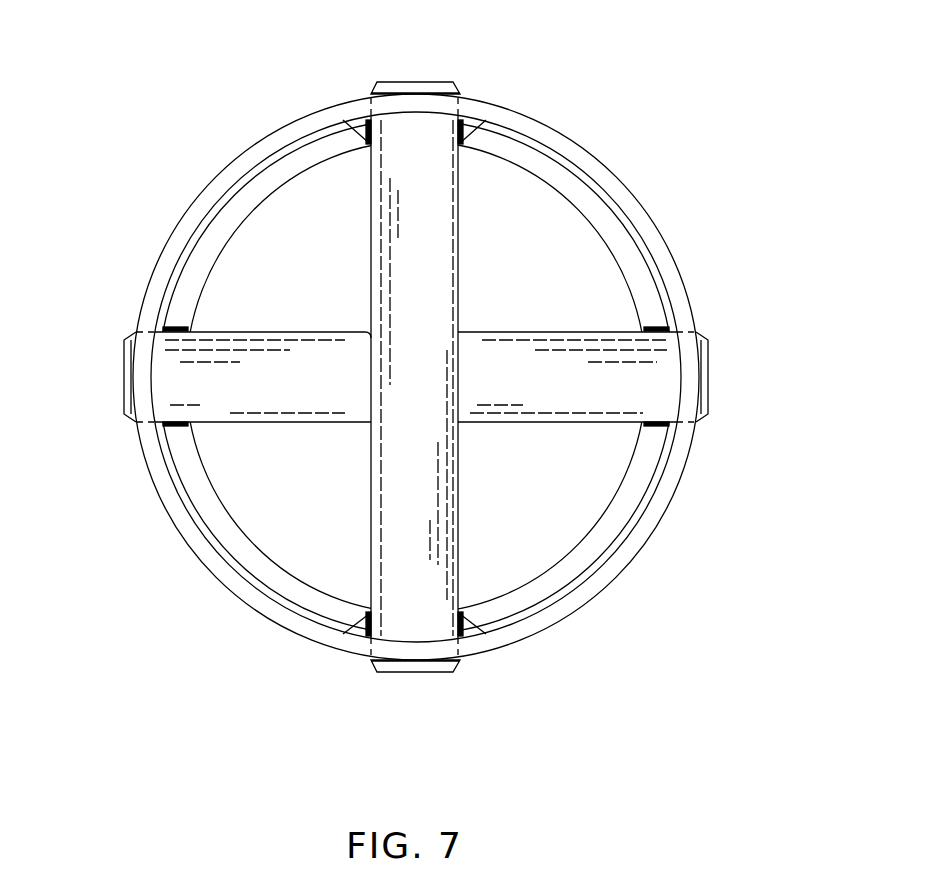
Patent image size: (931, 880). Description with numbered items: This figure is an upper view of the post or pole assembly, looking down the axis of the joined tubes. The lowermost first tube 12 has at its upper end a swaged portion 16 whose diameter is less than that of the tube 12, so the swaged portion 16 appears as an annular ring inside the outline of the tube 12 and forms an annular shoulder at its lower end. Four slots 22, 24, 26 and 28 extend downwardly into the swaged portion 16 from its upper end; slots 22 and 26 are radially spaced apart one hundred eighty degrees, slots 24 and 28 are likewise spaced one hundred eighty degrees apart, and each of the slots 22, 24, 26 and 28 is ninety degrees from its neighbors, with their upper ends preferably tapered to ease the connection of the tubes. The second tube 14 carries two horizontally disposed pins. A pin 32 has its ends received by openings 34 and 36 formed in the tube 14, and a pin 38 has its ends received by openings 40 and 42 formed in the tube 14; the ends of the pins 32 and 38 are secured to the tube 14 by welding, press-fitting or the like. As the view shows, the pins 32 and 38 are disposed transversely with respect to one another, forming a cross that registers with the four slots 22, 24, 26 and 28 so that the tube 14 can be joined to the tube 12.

The first tube 12 is at (414, 363).
The second tube 14 is at (567, 140).
The swaged portion 16 is at (600, 210).
The slot 22 is at (163, 327).
The slot 24 is at (370, 136).
The slot 26 is at (660, 332).
The slot 28 is at (367, 622).
The pin 32 is at (399, 311).
The opening 34 is at (147, 422).
The opening 36 is at (678, 330).
The pin 38 is at (408, 373).
The opening 40 is at (460, 650).
The opening 42 is at (460, 105).